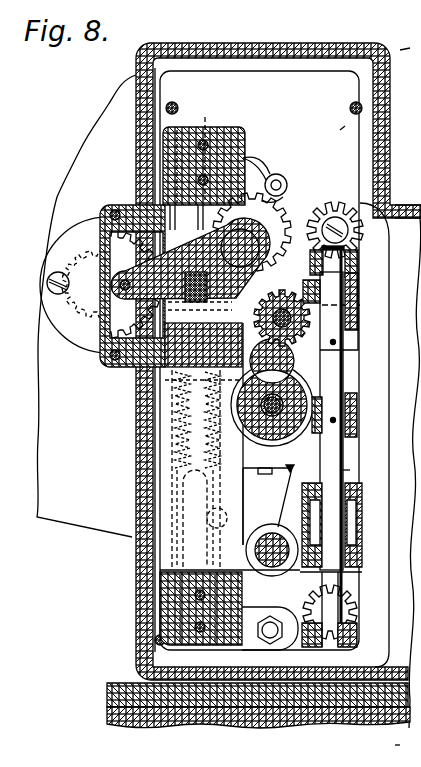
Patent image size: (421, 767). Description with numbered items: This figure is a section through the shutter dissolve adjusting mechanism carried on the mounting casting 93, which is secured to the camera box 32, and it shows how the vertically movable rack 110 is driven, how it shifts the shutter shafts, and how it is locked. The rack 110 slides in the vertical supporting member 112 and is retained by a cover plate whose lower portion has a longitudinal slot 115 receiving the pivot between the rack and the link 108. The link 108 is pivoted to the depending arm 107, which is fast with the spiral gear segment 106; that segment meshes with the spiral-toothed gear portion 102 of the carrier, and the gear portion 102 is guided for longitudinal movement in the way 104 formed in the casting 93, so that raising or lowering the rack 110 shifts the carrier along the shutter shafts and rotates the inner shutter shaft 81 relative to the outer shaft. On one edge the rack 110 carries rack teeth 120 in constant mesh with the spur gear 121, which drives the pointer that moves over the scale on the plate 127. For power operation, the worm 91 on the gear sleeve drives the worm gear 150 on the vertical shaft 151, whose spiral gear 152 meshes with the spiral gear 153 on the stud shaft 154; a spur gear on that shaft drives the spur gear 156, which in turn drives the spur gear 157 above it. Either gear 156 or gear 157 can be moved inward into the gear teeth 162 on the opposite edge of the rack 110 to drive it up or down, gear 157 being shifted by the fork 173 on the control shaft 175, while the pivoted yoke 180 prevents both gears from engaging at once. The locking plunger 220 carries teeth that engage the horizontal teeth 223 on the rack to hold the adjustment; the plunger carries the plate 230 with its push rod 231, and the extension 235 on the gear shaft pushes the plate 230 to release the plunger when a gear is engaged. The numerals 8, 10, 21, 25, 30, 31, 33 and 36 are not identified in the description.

The wall 8 is at (415, 473).
The mechanism 10 is at (192, 117).
The flange 21 is at (408, 185).
The flange plate 25 is at (408, 202).
The base plate 30 is at (123, 717).
The housing 31 is at (392, 140).
The camera box 32 is at (410, 59).
The mounting plate 33 is at (140, 694).
The base 36 is at (408, 742).
The inner shutter shaft 81 is at (345, 383).
The worm 91 is at (290, 374).
The mounting casting 93 is at (343, 128).
The gear portion 102 is at (280, 466).
The way 104 is at (352, 495).
The spiral gear segment 106 is at (272, 529).
The depending arm 107 is at (268, 615).
The link 108 is at (230, 646).
The rack 110 is at (118, 520).
The vertical supporting member 112 is at (247, 138).
The longitudinal slot 115 is at (130, 570).
The rack teeth 120 is at (152, 454).
The spur gear 121 is at (109, 286).
The plate 127 is at (70, 513).
The worm gear 150 is at (355, 425).
The vertical shaft 151 is at (344, 470).
The spiral gear 152 is at (352, 337).
The spiral gear 153 is at (310, 284).
The stud shaft 154 is at (278, 340).
The spur gear 156 is at (312, 258).
The spur gear 157 is at (268, 222).
The gear teeth 162 is at (153, 423).
The fork 173 is at (284, 200).
The control shaft 175 is at (289, 182).
The pivoted yoke 180 is at (266, 163).
The locking plunger 220 is at (168, 303).
The horizontal teeth 223 is at (160, 383).
The plate 230 is at (105, 243).
The push rod 231 is at (112, 290).
The extension 235 is at (268, 254).